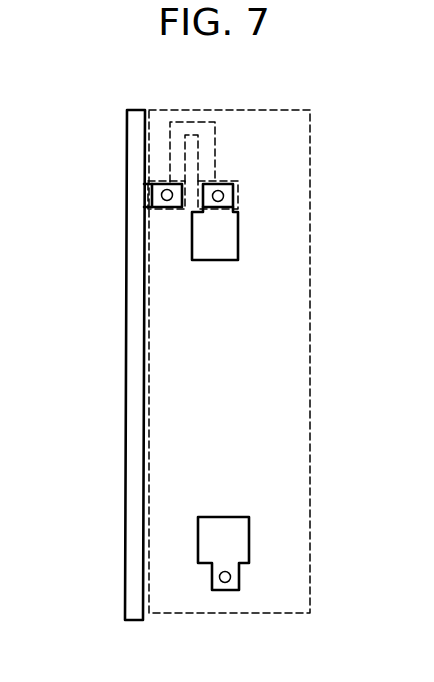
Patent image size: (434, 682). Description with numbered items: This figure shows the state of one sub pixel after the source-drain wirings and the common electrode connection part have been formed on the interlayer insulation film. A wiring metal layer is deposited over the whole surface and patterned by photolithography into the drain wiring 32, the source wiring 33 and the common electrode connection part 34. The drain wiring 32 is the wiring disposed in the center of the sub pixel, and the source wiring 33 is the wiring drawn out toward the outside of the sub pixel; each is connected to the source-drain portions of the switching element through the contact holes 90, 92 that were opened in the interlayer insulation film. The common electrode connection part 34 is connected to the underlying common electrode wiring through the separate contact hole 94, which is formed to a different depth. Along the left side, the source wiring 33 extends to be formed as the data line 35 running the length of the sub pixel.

The data line 35 is at (138, 110).
The source wiring 33 is at (156, 207).
The contact hole 90 is at (162, 207).
The contact hole 92 is at (220, 196).
The drain wiring 32 is at (228, 240).
The common electrode connection part 34 is at (237, 538).
The contact hole 94 is at (220, 577).